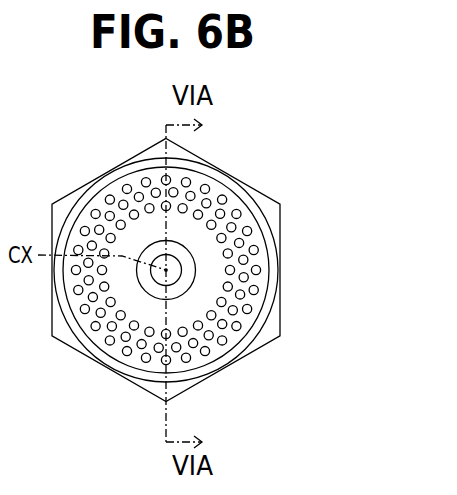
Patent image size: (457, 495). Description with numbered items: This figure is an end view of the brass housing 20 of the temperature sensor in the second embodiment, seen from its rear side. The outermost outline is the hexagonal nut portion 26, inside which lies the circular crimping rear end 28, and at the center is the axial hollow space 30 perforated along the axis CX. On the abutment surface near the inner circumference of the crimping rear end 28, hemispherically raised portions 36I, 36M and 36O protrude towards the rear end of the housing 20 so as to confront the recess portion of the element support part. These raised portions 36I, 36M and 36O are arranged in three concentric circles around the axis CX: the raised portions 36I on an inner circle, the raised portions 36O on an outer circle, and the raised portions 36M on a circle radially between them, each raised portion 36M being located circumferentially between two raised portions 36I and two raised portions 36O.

The housing 20 is at (92, 172).
The nut portion 26 is at (230, 174).
The crimping rear end 28 is at (260, 212).
The axial hollow space 30 is at (150, 292).
The raised portions 36I is at (196, 321).
The raised portions 36M is at (224, 328).
The raised portions 36O is at (226, 343).